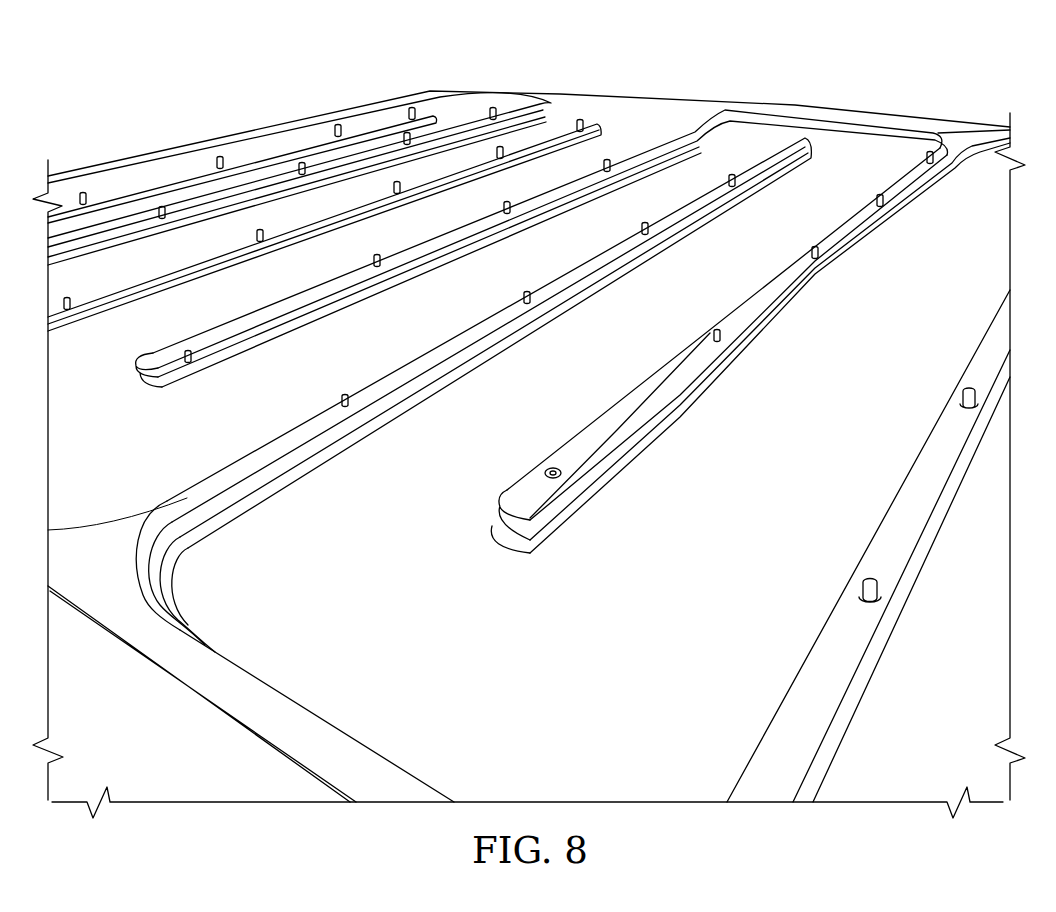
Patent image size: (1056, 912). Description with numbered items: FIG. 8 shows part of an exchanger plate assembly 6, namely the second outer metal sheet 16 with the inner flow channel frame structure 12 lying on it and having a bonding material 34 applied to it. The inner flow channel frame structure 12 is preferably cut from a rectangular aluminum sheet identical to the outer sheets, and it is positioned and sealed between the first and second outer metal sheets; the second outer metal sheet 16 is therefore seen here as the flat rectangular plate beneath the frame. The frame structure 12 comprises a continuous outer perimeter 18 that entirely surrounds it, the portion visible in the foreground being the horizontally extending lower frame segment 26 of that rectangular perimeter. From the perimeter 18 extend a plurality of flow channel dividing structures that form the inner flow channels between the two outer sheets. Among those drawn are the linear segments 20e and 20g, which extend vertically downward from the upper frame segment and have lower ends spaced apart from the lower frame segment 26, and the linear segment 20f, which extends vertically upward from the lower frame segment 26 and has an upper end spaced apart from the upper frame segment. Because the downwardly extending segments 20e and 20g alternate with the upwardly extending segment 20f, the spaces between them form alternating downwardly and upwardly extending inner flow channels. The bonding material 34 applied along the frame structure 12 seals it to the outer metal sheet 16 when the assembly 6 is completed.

The exchanger plate assembly 6 is at (240, 84).
The inner flow channel frame structure 12 is at (750, 345).
The second outer metal sheet 16 is at (373, 645).
The continuous outer perimeter 18 is at (182, 640).
The linear segment (downwardly extending flow channel dividing structure) 20e is at (888, 527).
The linear segment (upwardly extending flow channel dividing structure) 20f is at (767, 317).
The linear segment (downwardly extending flow channel dividing structure) 20g is at (597, 278).
The lower frame segment 26 is at (367, 760).
The bonding material 34 is at (570, 457).